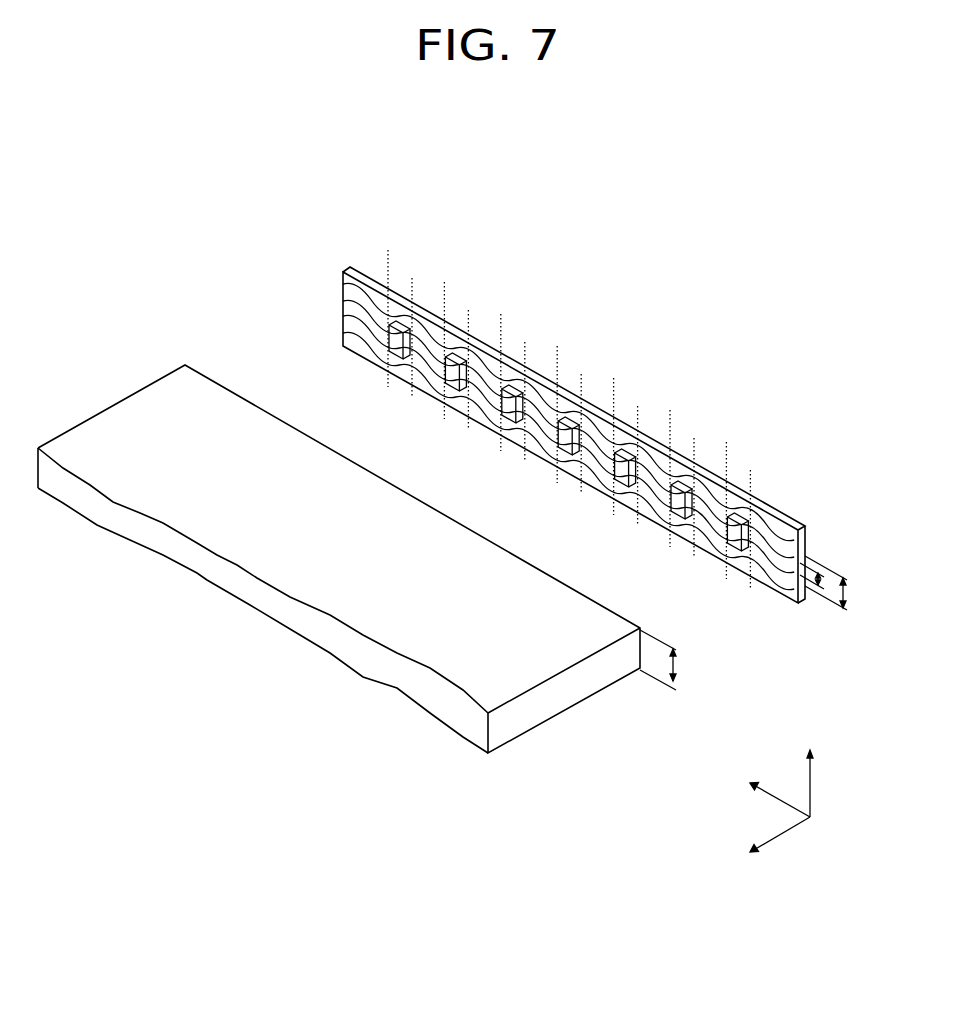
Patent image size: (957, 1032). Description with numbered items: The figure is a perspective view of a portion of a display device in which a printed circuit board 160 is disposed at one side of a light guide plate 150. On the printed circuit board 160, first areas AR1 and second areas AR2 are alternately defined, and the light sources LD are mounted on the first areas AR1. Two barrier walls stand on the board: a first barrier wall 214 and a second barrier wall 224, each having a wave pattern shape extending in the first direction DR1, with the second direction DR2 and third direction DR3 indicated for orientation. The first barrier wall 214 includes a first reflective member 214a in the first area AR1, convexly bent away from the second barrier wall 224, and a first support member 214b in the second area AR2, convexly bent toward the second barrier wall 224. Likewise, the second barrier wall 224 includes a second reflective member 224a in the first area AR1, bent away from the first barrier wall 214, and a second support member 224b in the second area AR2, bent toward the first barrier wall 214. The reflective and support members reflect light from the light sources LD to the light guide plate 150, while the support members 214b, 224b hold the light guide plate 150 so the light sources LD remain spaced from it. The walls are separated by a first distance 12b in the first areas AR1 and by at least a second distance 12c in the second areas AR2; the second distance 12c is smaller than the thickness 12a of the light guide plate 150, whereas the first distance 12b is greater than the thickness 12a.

The light guide plate 150 is at (570, 692).
The printed circuit board 160 is at (784, 514).
The first barrier wall 214 is at (499, 404).
The first reflective member 214a is at (343, 271).
The first support member 214b is at (385, 303).
The second barrier wall 224 is at (499, 452).
The second reflective member 224a is at (385, 338).
The second support member 224b is at (400, 382).
The light source LD is at (568, 444).
The first area AR1 is at (573, 414).
The second area AR2 is at (570, 403).
The thickness of the light guide plate 12a is at (676, 660).
The first distance 12b is at (843, 583).
The second distance 12c is at (822, 582).
The first direction DR1 is at (758, 795).
The second direction DR2 is at (758, 842).
The third direction DR3 is at (810, 771).